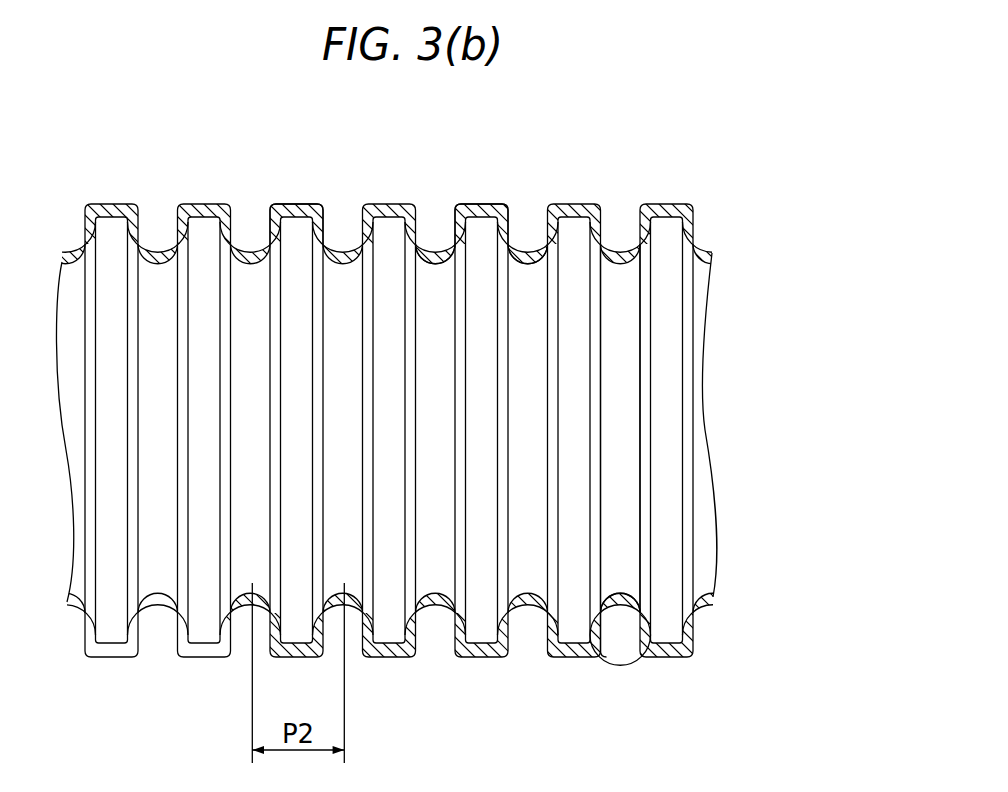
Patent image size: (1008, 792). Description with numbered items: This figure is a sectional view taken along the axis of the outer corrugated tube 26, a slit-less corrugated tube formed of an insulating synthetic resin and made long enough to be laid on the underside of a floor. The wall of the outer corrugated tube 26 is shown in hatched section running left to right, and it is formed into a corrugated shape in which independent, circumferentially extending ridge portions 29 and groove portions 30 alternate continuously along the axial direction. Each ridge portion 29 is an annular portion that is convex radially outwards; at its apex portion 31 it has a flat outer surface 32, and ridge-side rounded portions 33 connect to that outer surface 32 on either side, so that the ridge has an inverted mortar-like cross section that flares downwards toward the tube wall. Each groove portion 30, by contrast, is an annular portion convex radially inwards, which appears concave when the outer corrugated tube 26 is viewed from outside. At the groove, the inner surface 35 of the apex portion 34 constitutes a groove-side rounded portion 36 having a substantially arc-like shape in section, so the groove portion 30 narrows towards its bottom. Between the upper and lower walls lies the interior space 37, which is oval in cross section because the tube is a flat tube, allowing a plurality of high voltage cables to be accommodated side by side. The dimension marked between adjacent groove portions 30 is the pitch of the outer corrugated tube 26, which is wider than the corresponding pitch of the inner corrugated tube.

The outer corrugated tube 26 is at (611, 186).
The ridge portion 29 is at (483, 204).
The groove portion 30 is at (436, 252).
The apex portion 31 is at (300, 213).
The outer surface 32 is at (287, 207).
The ridge-side rounded portion 33 is at (273, 204).
The apex portion 34 is at (620, 592).
The inner surface 35 is at (631, 593).
The groove-side rounded portion 36 is at (641, 597).
The interior space 37 is at (614, 348).